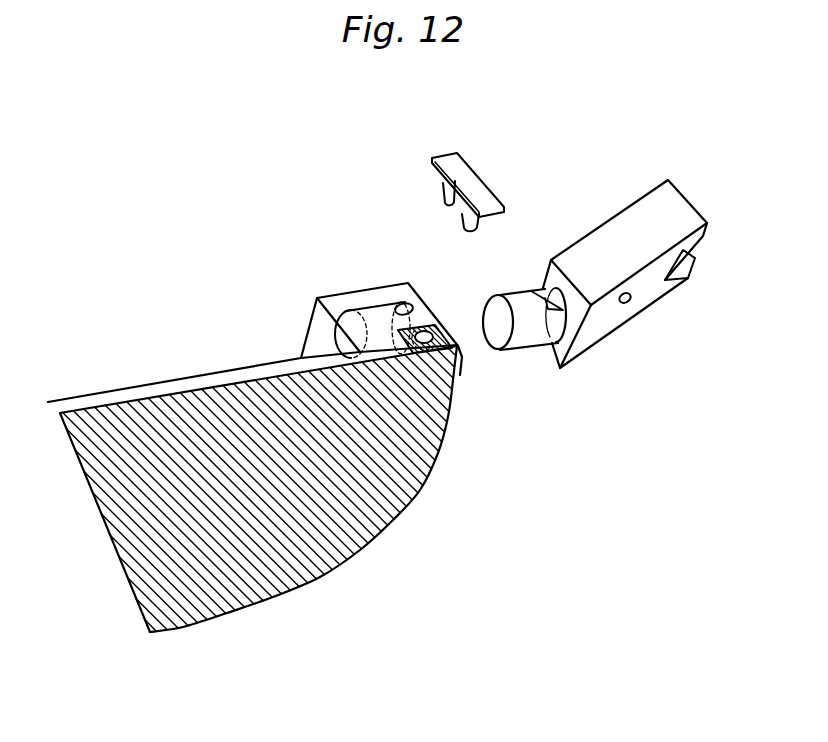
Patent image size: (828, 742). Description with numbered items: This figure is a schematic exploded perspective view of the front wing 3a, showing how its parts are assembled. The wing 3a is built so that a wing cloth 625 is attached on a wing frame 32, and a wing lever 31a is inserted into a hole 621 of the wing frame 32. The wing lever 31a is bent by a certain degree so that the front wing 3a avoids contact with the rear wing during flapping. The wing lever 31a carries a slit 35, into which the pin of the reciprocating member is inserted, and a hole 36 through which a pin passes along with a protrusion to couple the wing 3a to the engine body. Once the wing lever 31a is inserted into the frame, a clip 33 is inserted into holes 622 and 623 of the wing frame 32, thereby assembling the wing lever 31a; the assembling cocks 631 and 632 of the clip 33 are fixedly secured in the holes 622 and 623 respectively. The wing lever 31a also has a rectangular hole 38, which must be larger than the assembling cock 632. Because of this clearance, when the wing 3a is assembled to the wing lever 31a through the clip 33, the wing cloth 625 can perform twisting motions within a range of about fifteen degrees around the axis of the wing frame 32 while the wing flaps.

The front wing 3a is at (305, 255).
The wing frame 32 is at (246, 372).
The clip 33 is at (455, 160).
The wing lever 31a is at (613, 223).
The slit 35 is at (684, 253).
The hole 36 is at (631, 297).
The rectangular hole 38 is at (552, 352).
The hole 621 is at (422, 328).
The hole 622 is at (403, 303).
The hole 623 is at (451, 398).
The wing cloth 625 is at (386, 526).
The assembling cock 631 is at (480, 228).
The assembling cock 632 is at (445, 190).